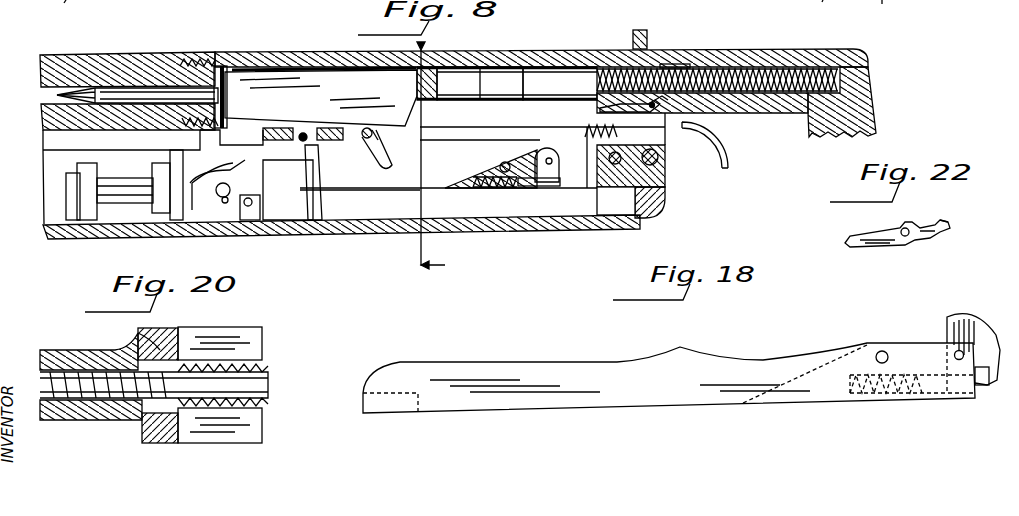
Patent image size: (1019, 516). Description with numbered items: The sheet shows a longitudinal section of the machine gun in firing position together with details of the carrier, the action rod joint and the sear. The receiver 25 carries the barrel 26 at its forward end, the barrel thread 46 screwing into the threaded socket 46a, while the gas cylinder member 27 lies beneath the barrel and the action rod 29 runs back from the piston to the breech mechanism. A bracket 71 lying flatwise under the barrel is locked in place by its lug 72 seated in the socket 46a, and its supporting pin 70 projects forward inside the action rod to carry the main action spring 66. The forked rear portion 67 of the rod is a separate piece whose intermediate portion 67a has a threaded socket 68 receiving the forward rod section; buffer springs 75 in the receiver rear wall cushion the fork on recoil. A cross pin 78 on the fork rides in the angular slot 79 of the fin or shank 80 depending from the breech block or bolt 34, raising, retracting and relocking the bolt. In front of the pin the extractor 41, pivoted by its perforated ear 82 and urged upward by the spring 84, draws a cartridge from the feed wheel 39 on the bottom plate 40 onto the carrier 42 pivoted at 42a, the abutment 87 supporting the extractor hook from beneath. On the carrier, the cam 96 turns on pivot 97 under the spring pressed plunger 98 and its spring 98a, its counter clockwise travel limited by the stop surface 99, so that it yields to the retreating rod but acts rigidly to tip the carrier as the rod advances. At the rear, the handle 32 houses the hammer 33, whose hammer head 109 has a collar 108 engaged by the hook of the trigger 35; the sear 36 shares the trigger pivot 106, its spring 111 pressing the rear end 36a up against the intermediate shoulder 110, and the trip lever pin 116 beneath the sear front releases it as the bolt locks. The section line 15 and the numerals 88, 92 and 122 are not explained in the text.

In FIG. 8, the section line 15 is at (442, 150).
In FIG. 8, the receiver 25 is at (280, 52).
In FIG. 8, the barrel 26 is at (108, 56).
In FIG. 8, the gas cylinder member 27 is at (63, 10).
In FIG. 20, the action rod 29 is at (55, 416).
In FIG. 8, the handle 32 is at (830, 137).
In FIG. 8, the hammer 33 is at (571, 74).
In FIG. 8, the breech block or bolt 34 is at (321, 98).
In FIG. 8, the trigger 35 is at (732, 152).
In FIG. 8, the sear 36 is at (695, 66).
In FIG. 22, the sear 36 is at (897, 230).
In FIG. 8, the rear end of the sear 36a is at (662, 104).
In FIG. 22, the rear end of the sear 36a is at (943, 220).
In FIG. 8, the feed wheel 39 is at (122, 204).
In FIG. 8, the bottom plate 40 is at (597, 224).
In FIG. 8, the extractor 41 is at (250, 163).
In FIG. 8, the carrier 42 is at (343, 192).
In FIG. 18, the carrier 42 is at (744, 357).
In FIG. 8, the carrier pivot 42a is at (506, 189).
In FIG. 8, the barrel thread 46 is at (214, 62).
In FIG. 8, the threaded socket 46a is at (197, 56).
In FIG. 20, the main action spring 66 is at (240, 396).
In FIG. 20, the forked rear portion of the action rod 67 is at (240, 338).
In FIG. 20, the intermediate portion of the fork 67a is at (176, 330).
In FIG. 20, the threaded socket 68 is at (133, 352).
In FIG. 20, the supporting pin 70 is at (268, 384).
In FIG. 8, the bracket 71 is at (121, 177).
In FIG. 8, the lug 72 is at (202, 131).
In FIG. 8, the buffer springs 75 is at (587, 140).
In FIG. 8, the cross pin 78 is at (382, 168).
In FIG. 8, the angular slot 79 is at (372, 136).
In FIG. 8, the fin or shank 80 is at (366, 140).
In FIG. 8, the perforated ear 82 is at (304, 145).
In FIG. 8, the extractor spring 84 is at (318, 141).
In FIG. 8, the abutment 87 is at (222, 197).
In FIG. 8, the sight 88 is at (821, 6).
In FIG. 8, the sight base 92 is at (882, 4).
In FIG. 8, the cam 96 is at (557, 158).
In FIG. 18, the cam 96 is at (968, 316).
In FIG. 8, the cam pivot 97 is at (541, 160).
In FIG. 18, the cam pivot 97 is at (956, 351).
In FIG. 8, the spring pressed plunger 98 is at (543, 187).
In FIG. 18, the spring pressed plunger 98 is at (983, 390).
In FIG. 8, the plunger spring 98a is at (478, 189).
In FIG. 18, the plunger spring 98a is at (880, 397).
In FIG. 18, the stop surface 99 is at (933, 350).
In FIG. 8, the trigger pivot 106 is at (655, 110).
In FIG. 8, the collar 108 is at (476, 66).
In FIG. 8, the hammer head 109 is at (440, 64).
In FIG. 8, the intermediate shoulder 110 is at (540, 66).
In FIG. 8, the sear spring 111 is at (678, 62).
In FIG. 8, the trip lever pin 116 is at (602, 122).
In FIG. 8, the sight 122 is at (640, 30).